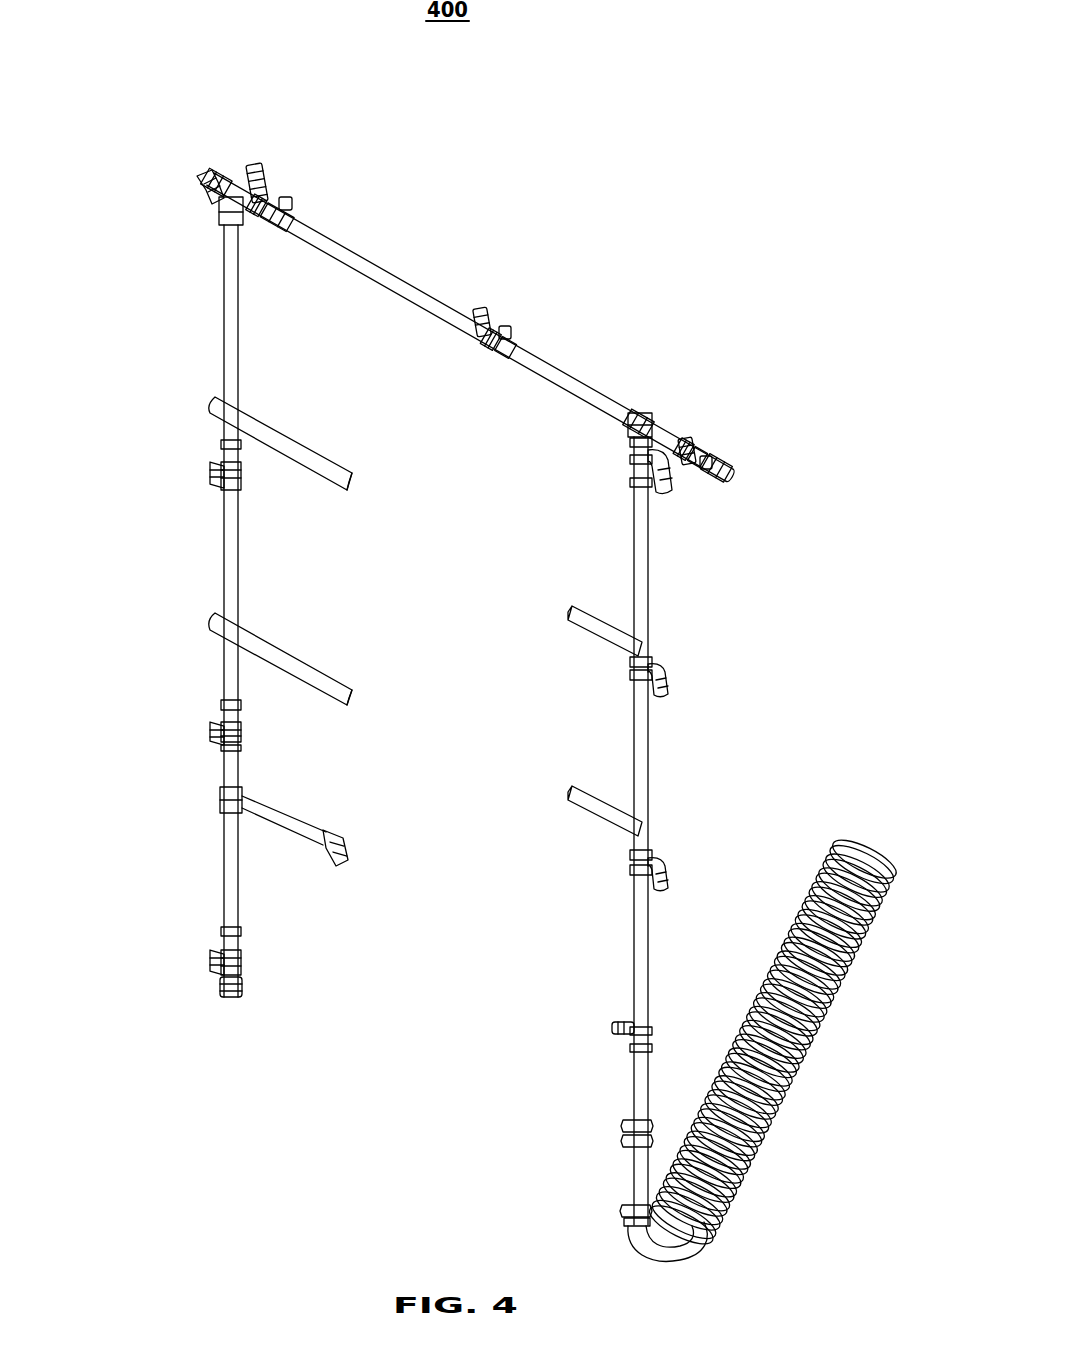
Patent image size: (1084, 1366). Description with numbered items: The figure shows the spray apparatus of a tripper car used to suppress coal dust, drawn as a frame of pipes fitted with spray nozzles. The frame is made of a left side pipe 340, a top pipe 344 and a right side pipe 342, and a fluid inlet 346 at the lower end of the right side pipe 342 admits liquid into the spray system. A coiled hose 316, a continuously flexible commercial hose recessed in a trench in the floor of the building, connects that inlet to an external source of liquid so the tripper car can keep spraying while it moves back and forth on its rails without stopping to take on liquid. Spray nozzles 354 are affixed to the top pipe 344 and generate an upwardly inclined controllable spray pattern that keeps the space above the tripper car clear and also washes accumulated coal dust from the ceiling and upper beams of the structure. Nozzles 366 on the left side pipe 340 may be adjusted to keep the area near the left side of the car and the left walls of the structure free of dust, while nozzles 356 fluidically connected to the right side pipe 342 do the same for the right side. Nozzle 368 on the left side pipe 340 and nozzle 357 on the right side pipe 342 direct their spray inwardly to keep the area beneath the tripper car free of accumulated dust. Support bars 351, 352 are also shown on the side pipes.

The coiled hose 316 is at (793, 1076).
The left side pipe 340 is at (230, 313).
The right side pipe 342 is at (643, 585).
The top pipe 344 is at (370, 262).
The fluid inlet 346 is at (634, 1178).
The upper support bar 351 is at (298, 450).
The lower support bar 352 is at (298, 665).
The spray nozzles 354 is at (258, 162).
The spray nozzles 356 is at (668, 485).
The nozzle 357 is at (612, 1026).
The spray nozzles 366 is at (215, 197).
The nozzle 368 is at (347, 864).